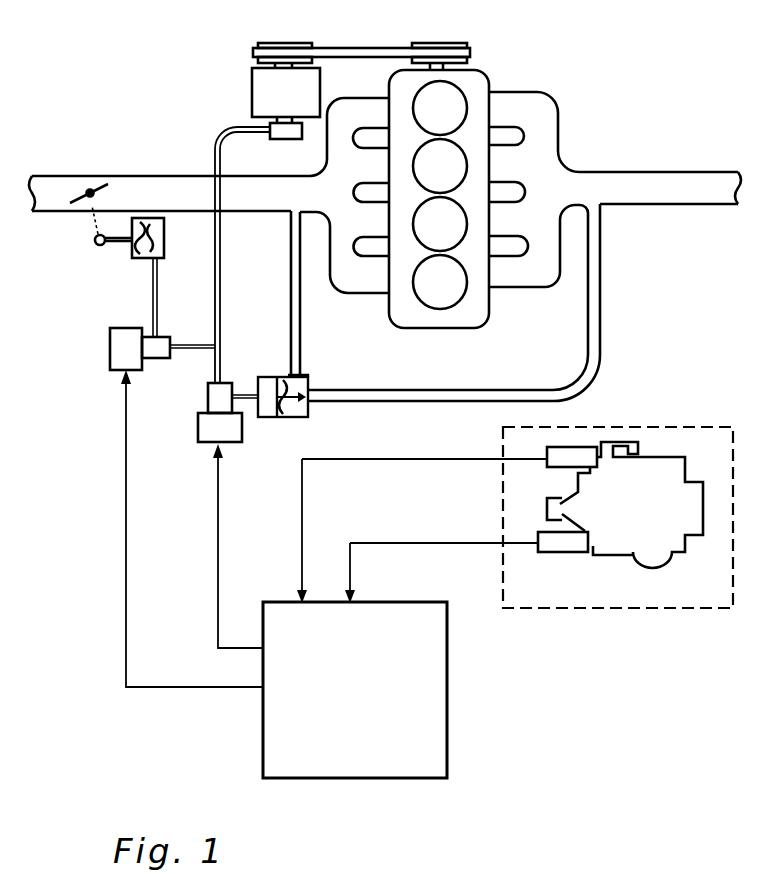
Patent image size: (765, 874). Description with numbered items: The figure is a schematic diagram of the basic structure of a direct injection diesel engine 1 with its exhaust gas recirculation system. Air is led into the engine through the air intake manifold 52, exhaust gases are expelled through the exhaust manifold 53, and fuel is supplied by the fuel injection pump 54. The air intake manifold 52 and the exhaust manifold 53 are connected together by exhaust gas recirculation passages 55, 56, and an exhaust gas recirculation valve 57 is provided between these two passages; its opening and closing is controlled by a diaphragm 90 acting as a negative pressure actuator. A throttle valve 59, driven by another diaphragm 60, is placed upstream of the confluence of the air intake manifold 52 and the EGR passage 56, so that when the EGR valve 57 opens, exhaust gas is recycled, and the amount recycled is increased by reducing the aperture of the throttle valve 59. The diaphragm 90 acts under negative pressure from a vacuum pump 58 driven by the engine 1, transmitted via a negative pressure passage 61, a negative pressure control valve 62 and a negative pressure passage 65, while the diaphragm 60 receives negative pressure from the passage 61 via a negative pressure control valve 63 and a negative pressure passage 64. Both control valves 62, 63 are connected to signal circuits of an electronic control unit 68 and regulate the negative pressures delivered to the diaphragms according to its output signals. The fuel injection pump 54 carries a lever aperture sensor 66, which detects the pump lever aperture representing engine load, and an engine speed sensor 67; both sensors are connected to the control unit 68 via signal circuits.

The direct injection diesel engine 1 is at (484, 75).
The air intake manifold 52 is at (158, 175).
The exhaust manifold 53 is at (623, 183).
The fuel injection pump 54 is at (650, 465).
The exhaust gas recirculation passage 55 is at (595, 267).
The exhaust gas recirculation passage 56 is at (302, 333).
The exhaust gas recirculation valve 57 is at (307, 420).
The vacuum pump 58 is at (265, 140).
The throttle valve 59 is at (98, 175).
The diaphragm 60 is at (132, 247).
The negative pressure passage 61 is at (220, 280).
The negative pressure control valve 62 is at (200, 432).
The negative pressure control valve 63 is at (107, 352).
The negative pressure passage 64 is at (152, 303).
The negative pressure passage 65 is at (250, 387).
The lever aperture sensor 66 is at (582, 450).
The engine speed sensor 67 is at (563, 552).
The electronic control unit 68 is at (433, 707).
The diaphragm 90 is at (285, 420).